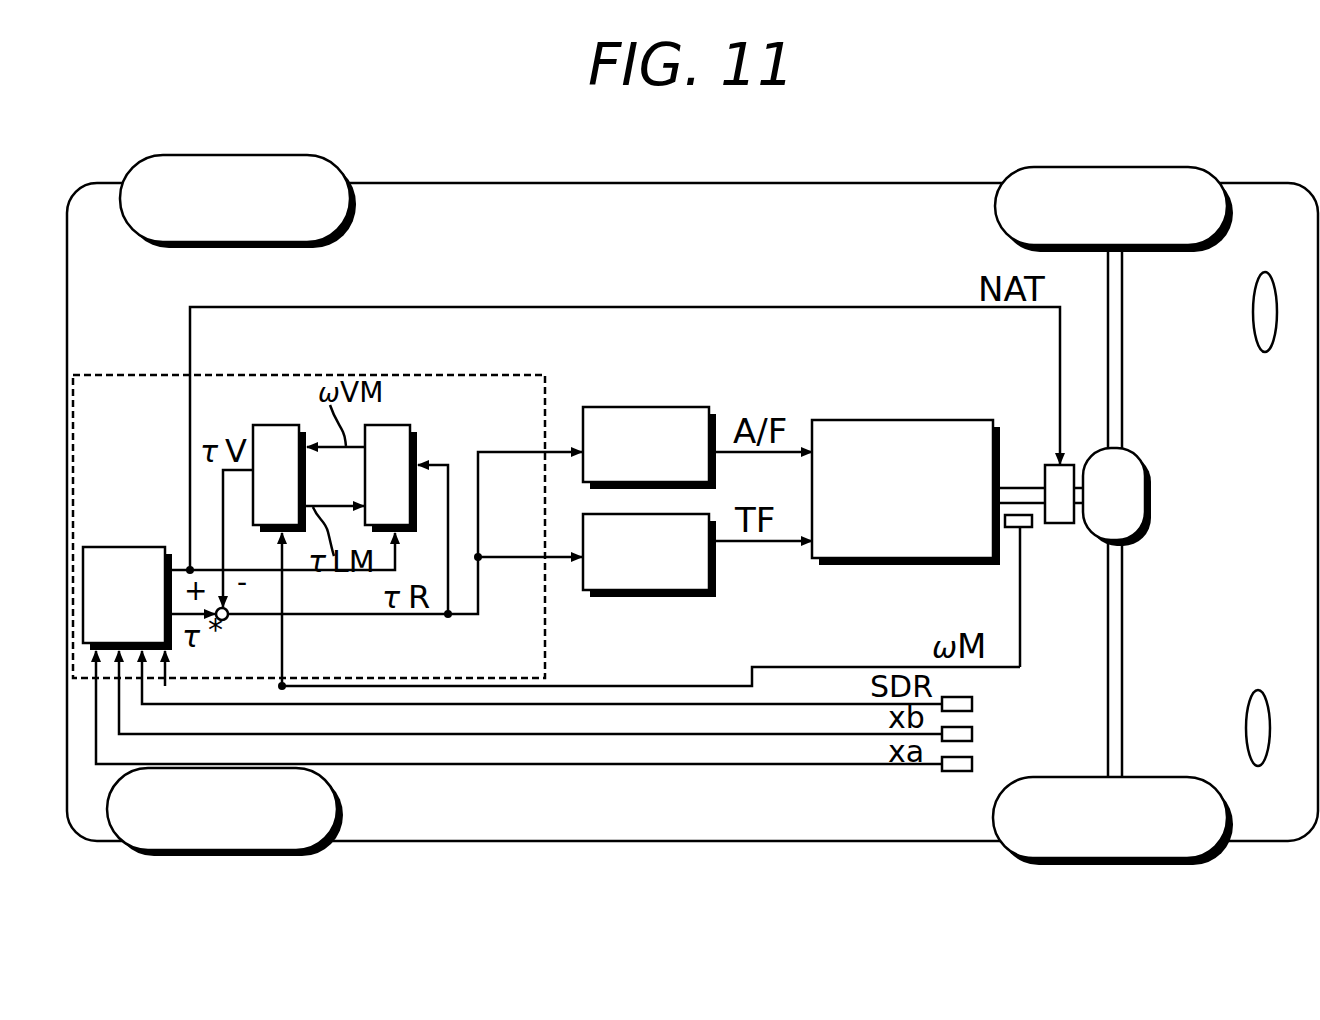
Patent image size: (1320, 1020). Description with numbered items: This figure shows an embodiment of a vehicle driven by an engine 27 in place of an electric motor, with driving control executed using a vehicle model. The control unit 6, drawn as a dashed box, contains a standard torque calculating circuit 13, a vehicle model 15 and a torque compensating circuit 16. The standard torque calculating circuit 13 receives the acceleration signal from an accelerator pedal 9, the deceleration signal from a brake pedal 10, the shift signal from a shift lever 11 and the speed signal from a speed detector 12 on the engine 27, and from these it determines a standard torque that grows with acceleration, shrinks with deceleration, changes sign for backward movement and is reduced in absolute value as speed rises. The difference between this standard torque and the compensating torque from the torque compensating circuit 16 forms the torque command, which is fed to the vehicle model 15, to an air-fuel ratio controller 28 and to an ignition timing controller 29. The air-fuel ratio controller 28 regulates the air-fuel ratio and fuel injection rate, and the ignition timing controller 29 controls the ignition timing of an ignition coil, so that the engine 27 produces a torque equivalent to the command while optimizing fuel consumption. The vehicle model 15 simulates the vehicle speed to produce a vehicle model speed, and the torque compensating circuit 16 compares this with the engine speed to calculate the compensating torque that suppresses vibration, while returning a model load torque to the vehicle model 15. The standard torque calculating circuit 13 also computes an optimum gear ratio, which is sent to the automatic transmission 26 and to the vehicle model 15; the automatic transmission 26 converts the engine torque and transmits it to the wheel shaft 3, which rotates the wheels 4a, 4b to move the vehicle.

The wheel shaft 3 is at (1123, 398).
The front wheel 4a is at (1085, 163).
The front wheel 4b is at (1112, 868).
The control unit 6 is at (343, 377).
The accelerator pedal 9 is at (972, 764).
The brake pedal 10 is at (972, 734).
The shift lever 11 is at (972, 704).
The speed detector 12 is at (1025, 530).
The standard torque calculating circuit 13 is at (158, 547).
The vehicle model 15 is at (388, 425).
The torque compensating circuit 16 is at (292, 425).
The automatic transmission 26 is at (1060, 532).
The engine 27 is at (990, 375).
The air-fuel ratio controller 28 is at (700, 360).
The ignition timing controller 29 is at (690, 598).